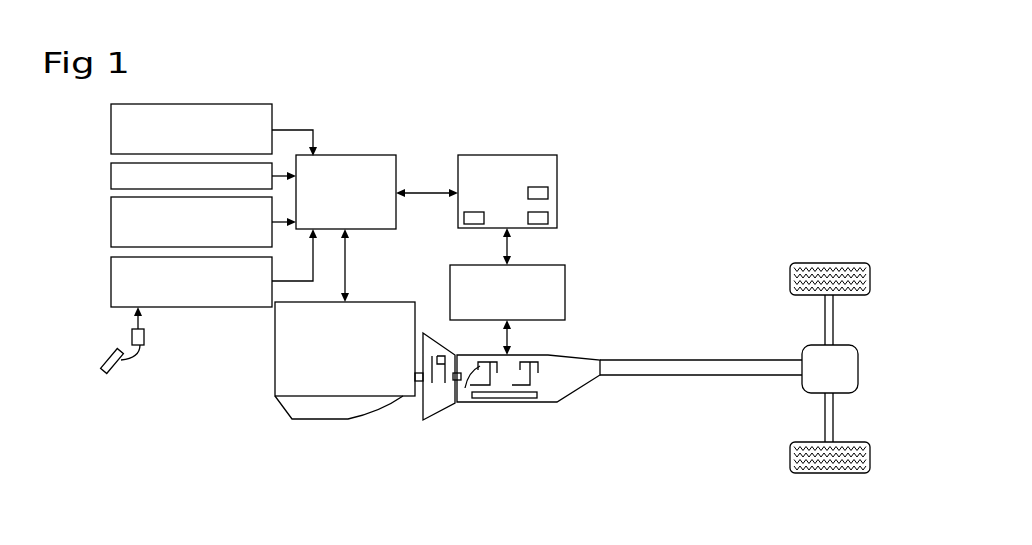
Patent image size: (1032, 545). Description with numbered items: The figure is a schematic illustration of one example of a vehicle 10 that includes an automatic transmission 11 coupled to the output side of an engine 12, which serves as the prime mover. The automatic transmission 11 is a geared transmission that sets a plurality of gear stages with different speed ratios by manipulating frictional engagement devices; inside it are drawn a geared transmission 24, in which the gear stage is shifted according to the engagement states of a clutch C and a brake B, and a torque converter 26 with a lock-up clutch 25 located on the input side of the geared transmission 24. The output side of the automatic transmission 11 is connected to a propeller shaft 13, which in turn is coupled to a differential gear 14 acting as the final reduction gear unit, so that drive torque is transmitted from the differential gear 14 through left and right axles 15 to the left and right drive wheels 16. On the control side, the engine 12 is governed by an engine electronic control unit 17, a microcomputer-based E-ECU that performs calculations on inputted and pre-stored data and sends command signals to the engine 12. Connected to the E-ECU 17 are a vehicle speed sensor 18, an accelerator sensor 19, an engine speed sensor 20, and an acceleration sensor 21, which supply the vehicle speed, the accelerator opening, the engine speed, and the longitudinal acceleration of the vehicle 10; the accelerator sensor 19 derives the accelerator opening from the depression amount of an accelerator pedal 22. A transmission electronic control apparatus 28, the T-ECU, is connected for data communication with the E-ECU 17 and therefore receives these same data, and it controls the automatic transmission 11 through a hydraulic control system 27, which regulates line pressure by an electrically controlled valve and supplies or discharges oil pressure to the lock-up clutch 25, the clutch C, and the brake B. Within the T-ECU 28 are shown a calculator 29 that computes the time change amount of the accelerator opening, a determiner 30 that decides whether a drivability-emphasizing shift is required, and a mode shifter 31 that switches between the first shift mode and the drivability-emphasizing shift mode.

The vehicle 10 is at (687, 145).
The automatic transmission 11 is at (543, 353).
The engine 12 is at (275, 355).
The propeller shaft 13 is at (712, 360).
The differential gear 14 is at (858, 368).
The axles 15 is at (835, 308).
The drive wheels 16 is at (832, 263).
The engine electronic control unit 17 is at (353, 155).
The vehicle speed sensor 18 is at (111, 176).
The accelerator sensor 19 is at (111, 278).
The engine speed sensor 20 is at (111, 220).
The acceleration sensor 21 is at (111, 128).
The accelerator pedal 22 is at (103, 360).
The geared transmission 24 is at (508, 398).
The lock-up clutch 25 is at (440, 356).
The torque converter 26 is at (437, 392).
The hydraulic control system 27 is at (565, 297).
The transmission electronic control apparatus 28 is at (510, 155).
The calculator 29 is at (464, 218).
The determiner 30 is at (548, 193).
The mode shifter 31 is at (548, 218).
The brake B is at (538, 368).
The clutch C is at (462, 380).